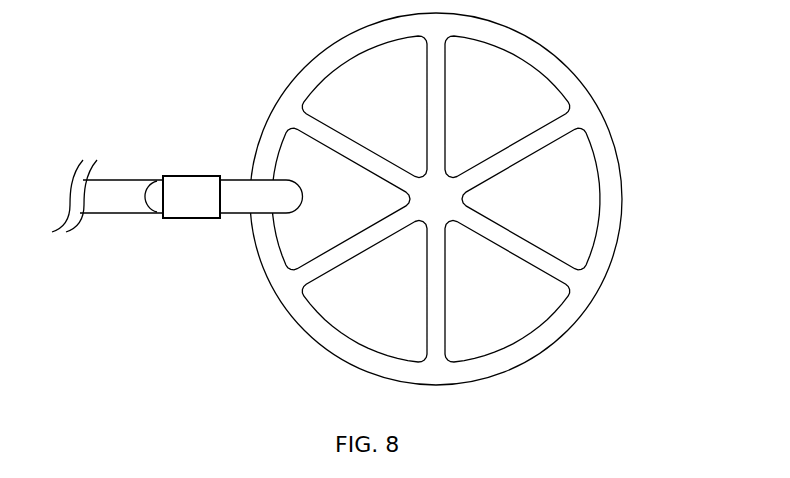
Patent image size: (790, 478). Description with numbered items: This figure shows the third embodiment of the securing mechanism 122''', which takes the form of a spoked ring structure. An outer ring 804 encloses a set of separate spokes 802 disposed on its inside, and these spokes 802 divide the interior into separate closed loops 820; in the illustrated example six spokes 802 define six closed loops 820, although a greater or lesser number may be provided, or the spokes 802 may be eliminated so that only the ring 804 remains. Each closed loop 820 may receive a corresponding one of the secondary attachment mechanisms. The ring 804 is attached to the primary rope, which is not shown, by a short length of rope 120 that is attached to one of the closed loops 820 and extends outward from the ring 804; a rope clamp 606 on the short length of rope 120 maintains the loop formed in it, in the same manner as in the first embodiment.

The securing mechanism 122''' is at (434, 214).
The spokes 802 is at (430, 65).
The ring 804 is at (268, 272).
The closed loops 820 is at (436, 199).
The short length of rope 120 is at (230, 190).
The rope clamp 606 is at (178, 205).